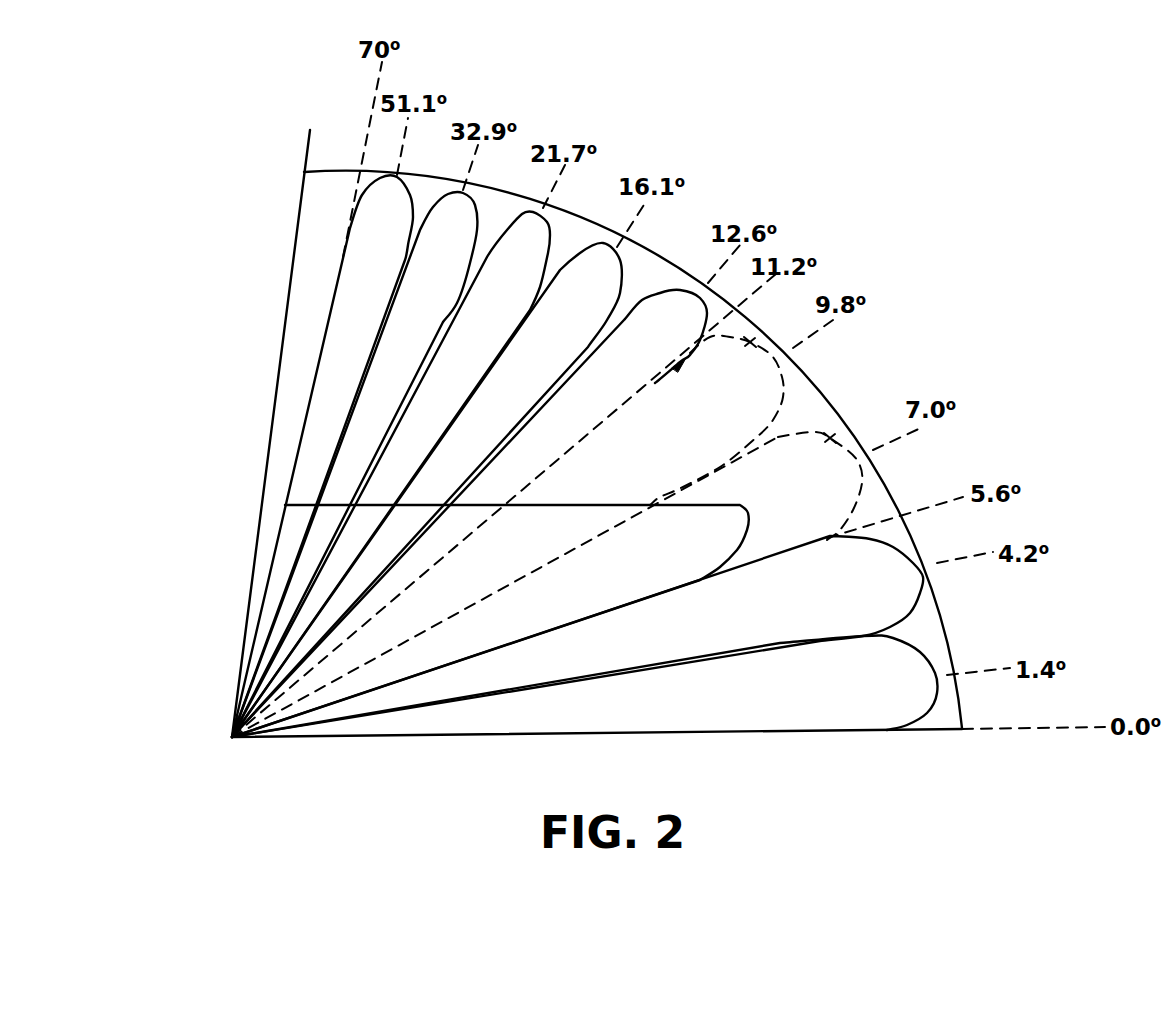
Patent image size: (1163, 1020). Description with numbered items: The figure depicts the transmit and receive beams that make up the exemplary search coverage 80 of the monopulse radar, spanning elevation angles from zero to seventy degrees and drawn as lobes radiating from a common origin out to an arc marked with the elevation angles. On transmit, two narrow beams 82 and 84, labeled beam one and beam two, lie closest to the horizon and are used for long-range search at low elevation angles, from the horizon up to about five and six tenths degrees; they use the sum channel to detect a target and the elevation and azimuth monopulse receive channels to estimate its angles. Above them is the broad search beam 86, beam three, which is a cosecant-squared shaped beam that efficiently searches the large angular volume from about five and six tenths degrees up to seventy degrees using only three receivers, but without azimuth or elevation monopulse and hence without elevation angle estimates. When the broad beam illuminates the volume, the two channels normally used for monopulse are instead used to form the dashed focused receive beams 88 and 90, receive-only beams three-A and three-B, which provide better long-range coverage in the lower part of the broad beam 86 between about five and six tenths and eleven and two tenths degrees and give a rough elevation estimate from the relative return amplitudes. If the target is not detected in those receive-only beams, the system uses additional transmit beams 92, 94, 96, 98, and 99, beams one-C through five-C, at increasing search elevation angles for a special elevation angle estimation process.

The search coverage 80 is at (990, 238).
The narrow beam 82 is at (865, 715).
The narrow beam 84 is at (631, 636).
The broad search beam 86 is at (723, 493).
The focused receive beam 88 is at (838, 425).
The focused receive beam 90 is at (780, 315).
The beam 1C 92 is at (663, 288).
The beam 2C 94 is at (585, 248).
The beam 3C 96 is at (458, 332).
The beam 4C 98 is at (410, 300).
The beam 5C 99 is at (355, 263).